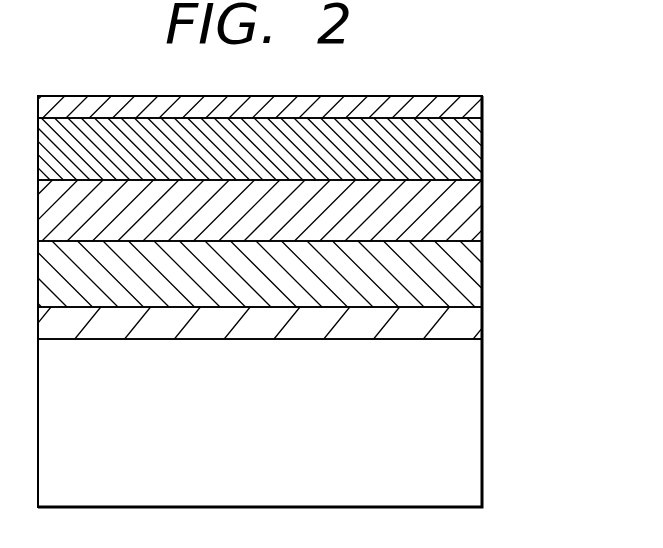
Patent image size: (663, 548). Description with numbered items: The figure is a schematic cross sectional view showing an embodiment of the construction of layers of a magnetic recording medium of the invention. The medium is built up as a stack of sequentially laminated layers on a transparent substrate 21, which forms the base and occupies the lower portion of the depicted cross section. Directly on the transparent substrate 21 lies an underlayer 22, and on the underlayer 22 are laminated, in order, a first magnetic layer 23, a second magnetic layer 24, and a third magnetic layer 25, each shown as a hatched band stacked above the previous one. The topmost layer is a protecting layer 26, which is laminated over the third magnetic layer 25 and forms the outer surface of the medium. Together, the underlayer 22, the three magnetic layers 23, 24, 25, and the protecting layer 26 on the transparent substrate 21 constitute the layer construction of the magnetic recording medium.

The transparent substrate 21 is at (474, 386).
The underlayer 22 is at (474, 324).
The first magnetic layer 23 is at (473, 272).
The second magnetic layer 24 is at (482, 201).
The third magnetic layer 25 is at (482, 143).
The protecting layer 26 is at (482, 103).